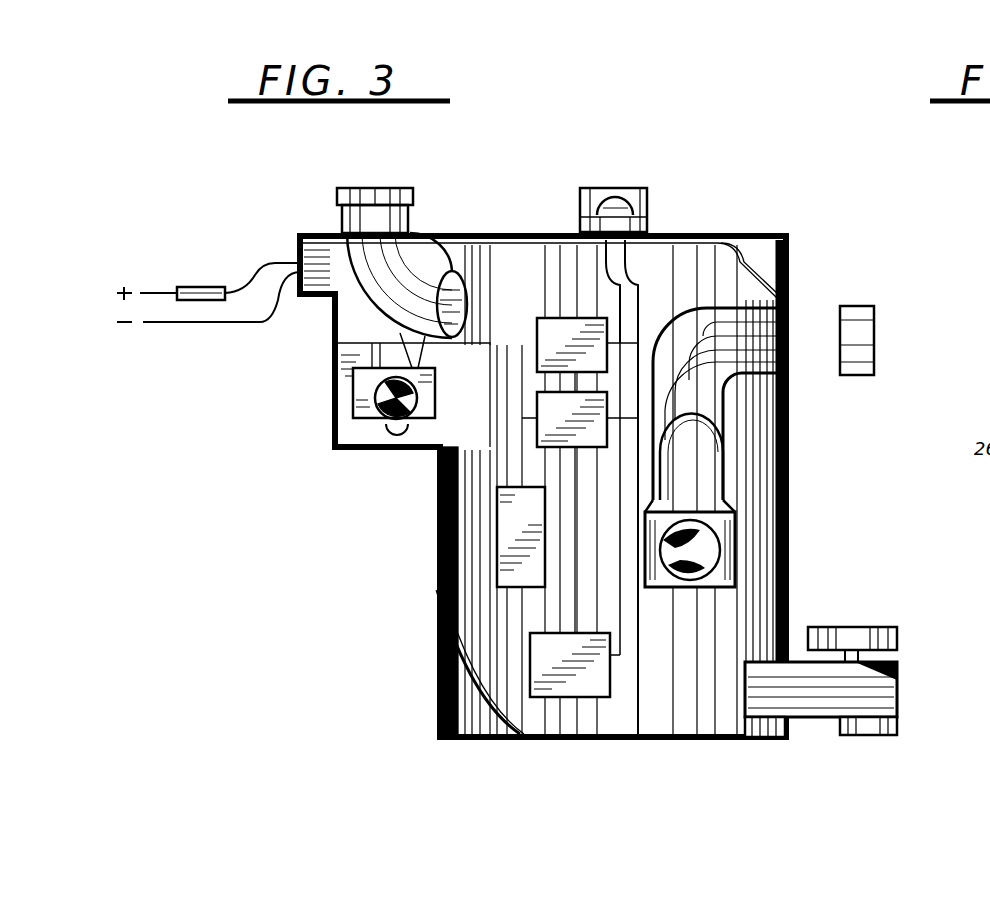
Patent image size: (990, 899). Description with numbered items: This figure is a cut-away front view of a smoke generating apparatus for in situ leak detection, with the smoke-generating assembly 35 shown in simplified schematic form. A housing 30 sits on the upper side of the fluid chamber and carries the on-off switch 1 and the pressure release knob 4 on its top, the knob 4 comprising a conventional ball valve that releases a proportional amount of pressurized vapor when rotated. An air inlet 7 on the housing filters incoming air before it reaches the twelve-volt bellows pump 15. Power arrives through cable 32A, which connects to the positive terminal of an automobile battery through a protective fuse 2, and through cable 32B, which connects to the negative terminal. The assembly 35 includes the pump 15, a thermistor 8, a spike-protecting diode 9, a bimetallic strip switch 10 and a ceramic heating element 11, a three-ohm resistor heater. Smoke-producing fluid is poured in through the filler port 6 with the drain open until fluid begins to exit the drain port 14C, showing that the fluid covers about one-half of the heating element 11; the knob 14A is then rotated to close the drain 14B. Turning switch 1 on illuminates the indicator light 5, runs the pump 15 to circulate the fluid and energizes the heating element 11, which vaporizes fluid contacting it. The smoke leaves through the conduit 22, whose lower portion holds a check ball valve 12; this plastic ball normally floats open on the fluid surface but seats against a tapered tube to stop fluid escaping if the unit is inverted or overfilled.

The on-off switch 1 is at (400, 232).
The fuse 2 is at (197, 287).
The pressure release knob 4 is at (333, 200).
The indicator light 5 is at (640, 206).
The filler port 6 is at (590, 187).
The air inlet 7 is at (380, 424).
The thermistor 8 is at (557, 327).
The spike-protecting diode 9 is at (570, 440).
The bimetallic strip switch 10 is at (535, 550).
The ceramic heating element 11 is at (583, 692).
The check ball valve 12 is at (717, 553).
The drain knob 14A is at (852, 628).
The drain 14B is at (898, 687).
The drain port 14C is at (882, 735).
The bellows pump 15 is at (358, 388).
The conduit 22 is at (813, 307).
The housing 30 is at (340, 445).
The positive cable 32A is at (157, 293).
The negative cable 32B is at (167, 322).
The smoke-generating assembly 35 is at (621, 648).